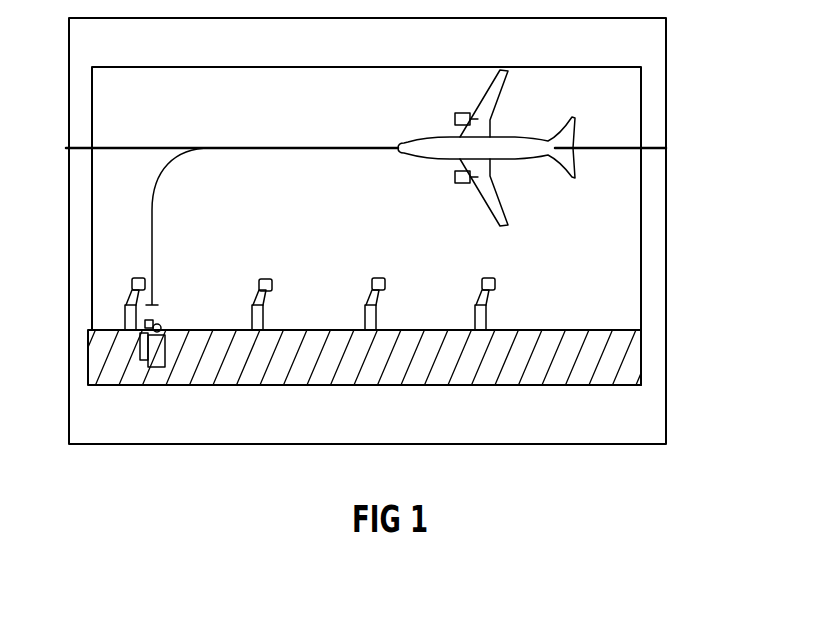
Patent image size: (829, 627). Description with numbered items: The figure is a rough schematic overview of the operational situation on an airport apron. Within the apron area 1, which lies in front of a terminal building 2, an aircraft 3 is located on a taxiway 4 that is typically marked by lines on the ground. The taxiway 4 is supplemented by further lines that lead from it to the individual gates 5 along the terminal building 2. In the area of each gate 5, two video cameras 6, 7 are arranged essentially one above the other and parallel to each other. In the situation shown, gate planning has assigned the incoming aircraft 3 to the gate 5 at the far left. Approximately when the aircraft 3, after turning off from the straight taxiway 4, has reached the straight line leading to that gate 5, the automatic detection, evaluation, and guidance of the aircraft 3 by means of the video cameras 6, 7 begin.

The apron area 1 is at (628, 266).
The terminal building 2 is at (628, 358).
The aircraft 3 is at (525, 137).
The taxiway 4 is at (645, 147).
The gates 5 is at (125, 313).
The video camera 6 is at (140, 348).
The video camera 7 is at (160, 367).